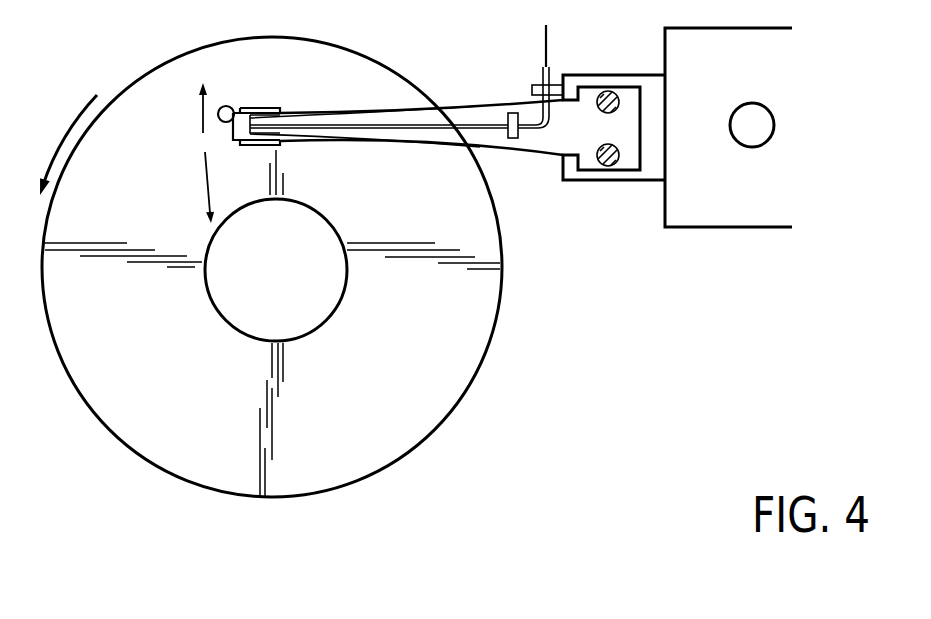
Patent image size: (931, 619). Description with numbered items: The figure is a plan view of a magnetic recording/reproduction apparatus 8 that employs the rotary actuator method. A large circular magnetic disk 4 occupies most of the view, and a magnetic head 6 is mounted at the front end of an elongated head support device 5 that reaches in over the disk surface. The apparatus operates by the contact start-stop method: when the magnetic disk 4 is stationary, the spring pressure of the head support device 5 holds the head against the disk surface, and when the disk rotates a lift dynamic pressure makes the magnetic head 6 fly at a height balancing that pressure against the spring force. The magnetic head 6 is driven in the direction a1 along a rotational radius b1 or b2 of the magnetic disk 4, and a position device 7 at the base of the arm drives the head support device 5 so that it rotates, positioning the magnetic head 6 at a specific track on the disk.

The magnetic disk 4 is at (448, 402).
The head support device 5 is at (480, 97).
The magnetic head 6 is at (258, 107).
The position device 7 is at (748, 207).
The magnetic recording/reproduction apparatus 8 is at (175, 520).
The drive direction a1 is at (75, 113).
The rotational radius b1 is at (205, 167).
The rotational radius b2 is at (202, 120).